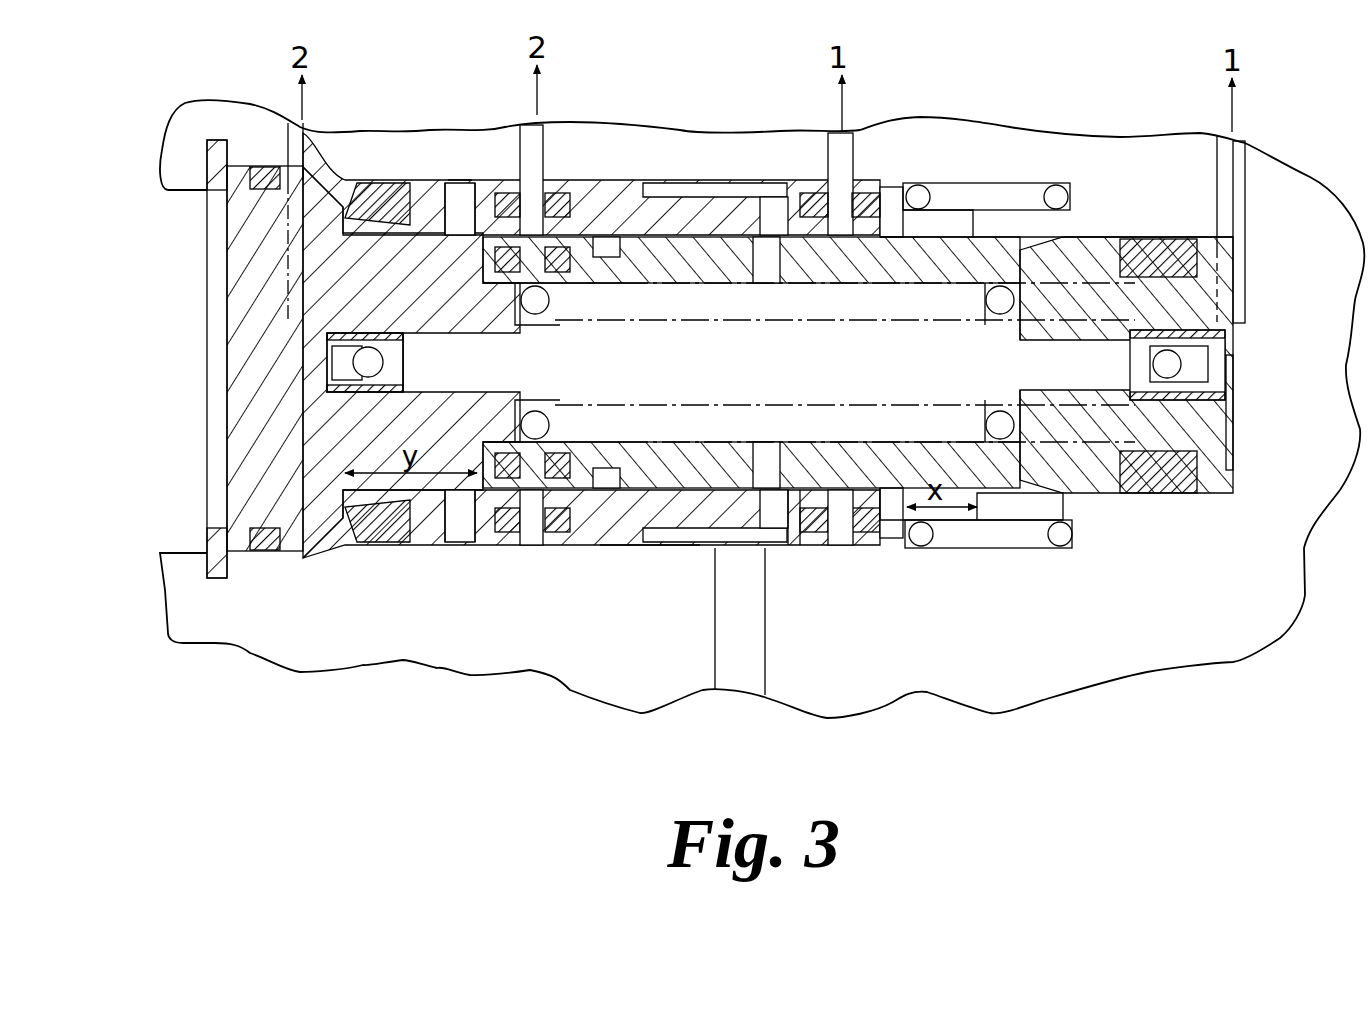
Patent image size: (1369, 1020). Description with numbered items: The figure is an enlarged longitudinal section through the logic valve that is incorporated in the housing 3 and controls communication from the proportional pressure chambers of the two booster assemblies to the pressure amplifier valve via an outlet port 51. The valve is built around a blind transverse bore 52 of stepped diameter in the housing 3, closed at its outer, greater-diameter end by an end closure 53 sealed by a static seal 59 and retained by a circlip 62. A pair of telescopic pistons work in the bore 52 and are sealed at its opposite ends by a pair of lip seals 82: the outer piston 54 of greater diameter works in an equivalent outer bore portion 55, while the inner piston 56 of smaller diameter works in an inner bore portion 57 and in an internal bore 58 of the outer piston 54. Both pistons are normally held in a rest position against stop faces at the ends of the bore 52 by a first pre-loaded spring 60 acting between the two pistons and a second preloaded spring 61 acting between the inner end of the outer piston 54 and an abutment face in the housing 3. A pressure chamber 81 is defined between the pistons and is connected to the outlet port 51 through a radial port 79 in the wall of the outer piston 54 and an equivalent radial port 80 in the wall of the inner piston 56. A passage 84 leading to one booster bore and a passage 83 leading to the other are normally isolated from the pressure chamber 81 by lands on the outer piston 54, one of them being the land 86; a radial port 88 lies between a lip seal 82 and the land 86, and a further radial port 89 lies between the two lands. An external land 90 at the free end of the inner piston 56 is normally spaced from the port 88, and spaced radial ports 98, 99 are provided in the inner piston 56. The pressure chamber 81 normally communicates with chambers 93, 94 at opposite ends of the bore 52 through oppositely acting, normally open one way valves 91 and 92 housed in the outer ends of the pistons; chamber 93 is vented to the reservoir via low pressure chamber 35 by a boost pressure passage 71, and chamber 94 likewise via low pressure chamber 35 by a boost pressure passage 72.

The housing 3 is at (1293, 592).
The low pressure chamber 35 is at (843, 245).
The outlet port 51 is at (737, 660).
The blind transverse bore 52 is at (655, 550).
The end closure 53 is at (262, 333).
The outer piston 54 is at (430, 547).
The outer bore portion 55 is at (350, 547).
The inner piston 56 is at (1213, 495).
The inner bore portion 57 is at (1148, 495).
The internal bore 58 is at (845, 548).
The static seal 59 is at (235, 218).
The first pre-loaded spring 60 is at (1063, 490).
The second preloaded spring 61 is at (1040, 550).
The circlip 62 is at (205, 178).
The boost pressure passage 71 is at (303, 152).
The boost pressure passage 72 is at (1217, 190).
The radial port 79 is at (790, 550).
The radial port 80 is at (777, 440).
The pressure chamber 81 is at (893, 350).
The lip seals 82 is at (375, 547).
The passage 83 is at (540, 147).
The passage 84 is at (843, 152).
The land 86 is at (557, 270).
The radial port 88 is at (458, 180).
The radial port 89 is at (772, 205).
The external land 90 is at (537, 547).
The one way valve 91 is at (368, 362).
The one way valve 92 is at (1188, 358).
The chamber 93 is at (300, 468).
The chamber 94 is at (1236, 442).
The radial port 98 is at (752, 262).
The radial port 99 is at (604, 245).